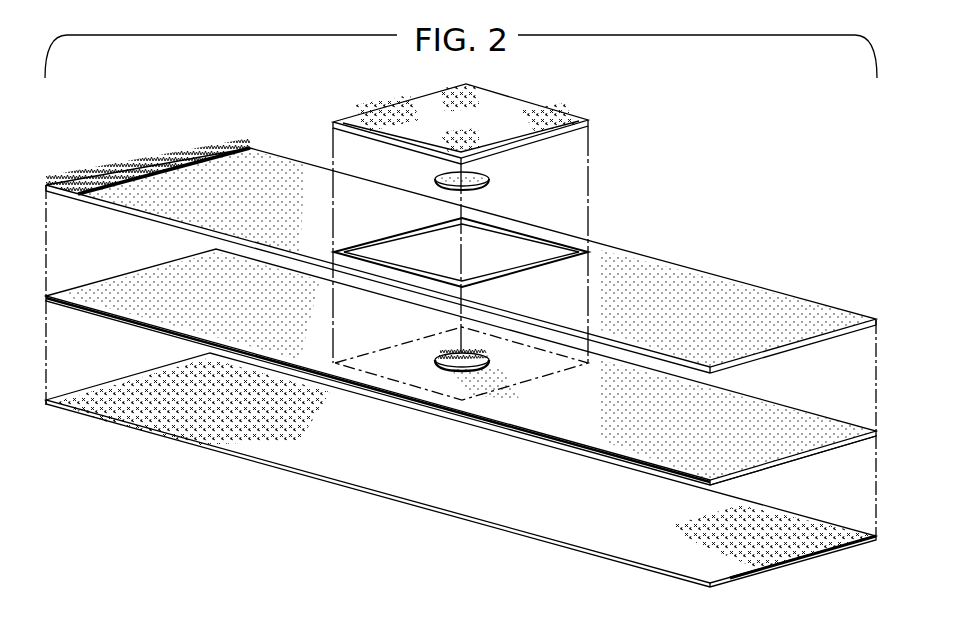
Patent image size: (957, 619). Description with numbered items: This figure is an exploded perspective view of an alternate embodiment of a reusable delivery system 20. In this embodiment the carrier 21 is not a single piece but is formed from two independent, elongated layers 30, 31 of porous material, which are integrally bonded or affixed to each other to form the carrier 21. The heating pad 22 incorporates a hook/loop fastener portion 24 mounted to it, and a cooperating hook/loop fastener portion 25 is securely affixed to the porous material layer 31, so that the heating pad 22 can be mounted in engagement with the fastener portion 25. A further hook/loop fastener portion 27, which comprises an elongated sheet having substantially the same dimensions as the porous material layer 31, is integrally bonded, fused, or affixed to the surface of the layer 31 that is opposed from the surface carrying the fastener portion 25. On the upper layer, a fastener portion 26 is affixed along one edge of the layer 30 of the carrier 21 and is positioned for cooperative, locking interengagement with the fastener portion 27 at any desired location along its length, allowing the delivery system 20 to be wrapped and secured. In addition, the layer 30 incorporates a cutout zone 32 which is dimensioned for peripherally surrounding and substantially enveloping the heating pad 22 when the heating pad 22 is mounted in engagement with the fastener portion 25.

The delivery system 20 is at (693, 207).
The carrier 21 is at (799, 317).
The heating pad 22 is at (541, 110).
The hook/loop fastener portion 24 is at (489, 177).
The hook/loop fastener portion 25 is at (486, 352).
The fastener portion 26 is at (170, 143).
The hook/loop fastener portion 27 is at (315, 478).
The porous material layer 30 is at (638, 288).
The porous material layer 31 is at (757, 468).
The cutout zone 32 is at (392, 236).